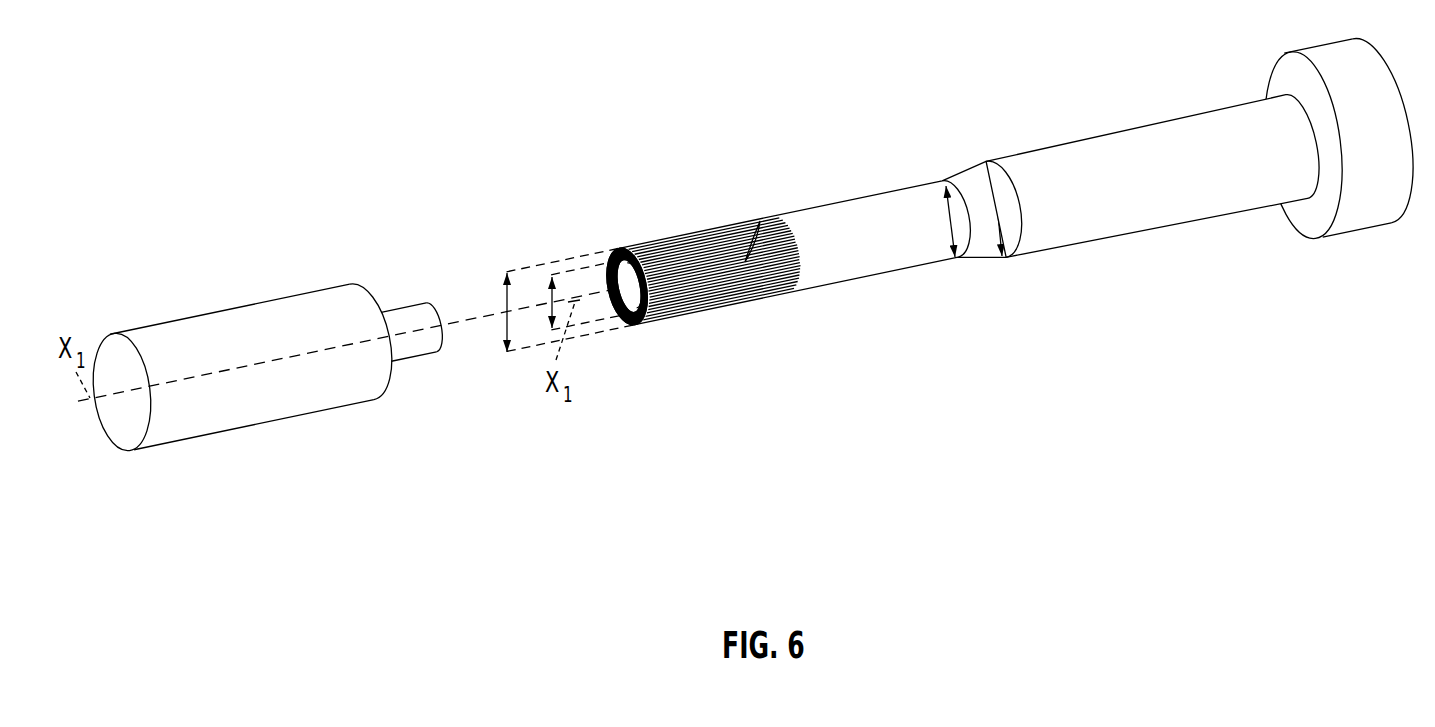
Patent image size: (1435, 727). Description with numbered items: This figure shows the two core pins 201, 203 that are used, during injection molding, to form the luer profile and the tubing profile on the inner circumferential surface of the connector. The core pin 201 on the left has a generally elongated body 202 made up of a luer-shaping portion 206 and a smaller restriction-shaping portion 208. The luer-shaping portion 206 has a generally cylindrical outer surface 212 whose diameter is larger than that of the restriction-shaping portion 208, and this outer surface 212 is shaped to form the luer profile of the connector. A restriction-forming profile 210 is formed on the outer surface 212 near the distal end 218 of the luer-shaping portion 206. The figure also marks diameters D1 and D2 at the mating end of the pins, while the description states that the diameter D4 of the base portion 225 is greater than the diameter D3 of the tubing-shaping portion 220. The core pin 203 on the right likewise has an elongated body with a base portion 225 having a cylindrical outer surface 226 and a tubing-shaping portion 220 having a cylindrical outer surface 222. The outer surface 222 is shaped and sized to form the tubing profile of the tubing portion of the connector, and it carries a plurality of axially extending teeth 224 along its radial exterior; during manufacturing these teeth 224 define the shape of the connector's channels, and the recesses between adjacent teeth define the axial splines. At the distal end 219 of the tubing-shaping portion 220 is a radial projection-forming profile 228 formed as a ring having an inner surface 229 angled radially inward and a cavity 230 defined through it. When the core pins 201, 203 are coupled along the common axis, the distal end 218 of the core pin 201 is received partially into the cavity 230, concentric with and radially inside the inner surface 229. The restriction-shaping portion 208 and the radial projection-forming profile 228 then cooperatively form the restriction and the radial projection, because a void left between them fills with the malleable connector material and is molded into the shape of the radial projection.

The core pin 201 is at (279, 366).
The elongated body 202 is at (240, 385).
The core pin 203 is at (979, 239).
The luer-shaping portion 206 is at (171, 441).
The restriction-shaping portion 208 is at (398, 314).
The restriction-forming profile 210 is at (424, 317).
The cylindrical outer surface 212 is at (205, 318).
The distal end 218 is at (443, 343).
The distal end 219 is at (611, 323).
The tubing-shaping portion 220 is at (768, 303).
The cylindrical outer surface 222 is at (883, 195).
The axially extending teeth 224 is at (760, 220).
The base portion 225 is at (1156, 158).
The cylindrical outer surface 226 is at (1168, 219).
The radial projection-forming profile 228 is at (609, 261).
The inner surface 229 is at (611, 283).
The cavity 230 is at (627, 321).
The outer diameter D1 is at (506, 315).
The inner diameter D2 is at (551, 307).
The diameter of the tubing-shaping portion D3 is at (947, 223).
The diameter of the base portion D4 is at (1000, 210).